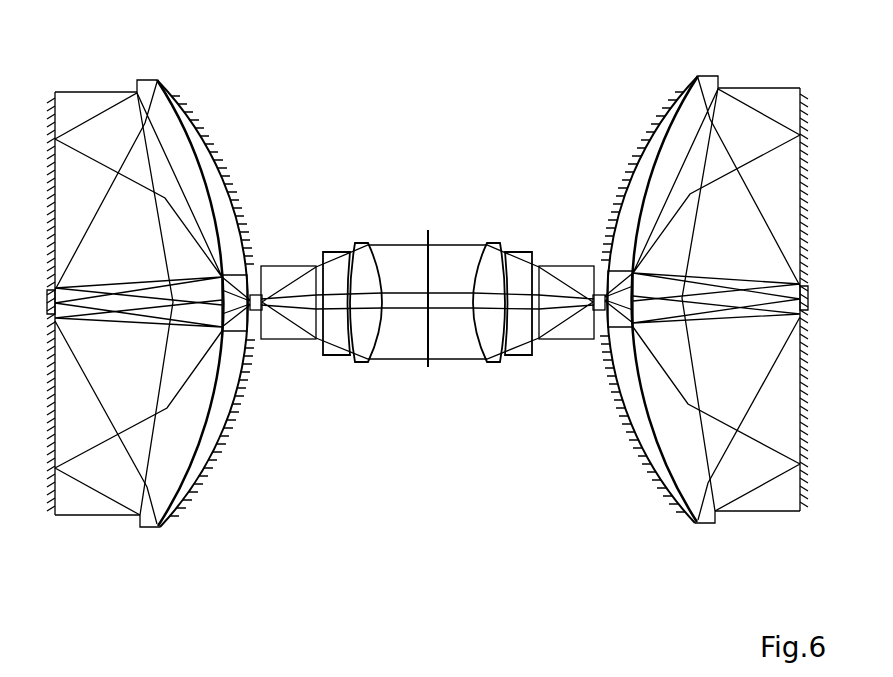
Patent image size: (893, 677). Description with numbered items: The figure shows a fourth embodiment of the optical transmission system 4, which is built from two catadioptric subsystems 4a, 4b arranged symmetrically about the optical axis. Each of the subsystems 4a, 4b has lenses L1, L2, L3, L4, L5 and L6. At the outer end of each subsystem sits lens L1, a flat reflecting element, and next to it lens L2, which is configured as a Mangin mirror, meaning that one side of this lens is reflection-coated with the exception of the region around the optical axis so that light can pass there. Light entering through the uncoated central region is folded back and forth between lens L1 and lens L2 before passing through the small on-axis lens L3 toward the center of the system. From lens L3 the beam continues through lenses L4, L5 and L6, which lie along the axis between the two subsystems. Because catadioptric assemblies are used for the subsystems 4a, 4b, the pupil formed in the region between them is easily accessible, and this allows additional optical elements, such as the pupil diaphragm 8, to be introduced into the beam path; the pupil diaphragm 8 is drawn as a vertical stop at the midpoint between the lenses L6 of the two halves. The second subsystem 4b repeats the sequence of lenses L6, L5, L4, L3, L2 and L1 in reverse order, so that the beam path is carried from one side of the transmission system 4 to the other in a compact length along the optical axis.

The transmission system 4 is at (560, 110).
The subsystem 4a is at (432, 543).
The subsystem 4b is at (808, 540).
The lens L1 is at (92, 98).
The lens L2 is at (163, 97).
The lens L3 is at (255, 310).
The lens L4 is at (273, 260).
The lens L5 is at (331, 256).
The lens L6 is at (362, 246).
The pupil diaphragm 8 is at (430, 238).